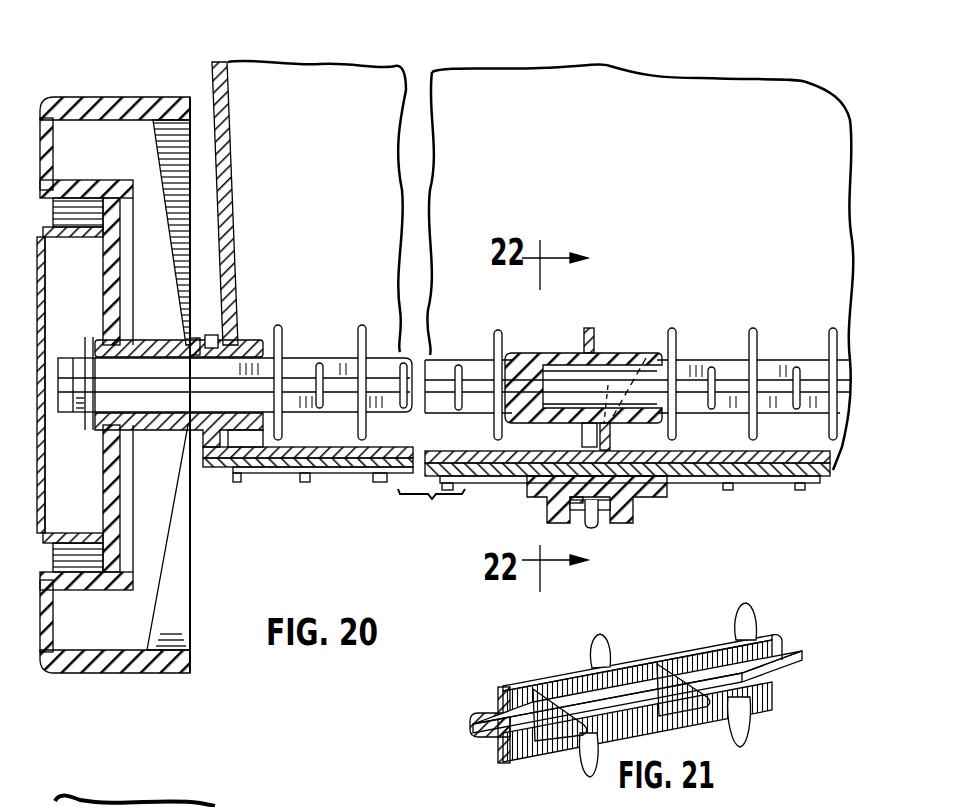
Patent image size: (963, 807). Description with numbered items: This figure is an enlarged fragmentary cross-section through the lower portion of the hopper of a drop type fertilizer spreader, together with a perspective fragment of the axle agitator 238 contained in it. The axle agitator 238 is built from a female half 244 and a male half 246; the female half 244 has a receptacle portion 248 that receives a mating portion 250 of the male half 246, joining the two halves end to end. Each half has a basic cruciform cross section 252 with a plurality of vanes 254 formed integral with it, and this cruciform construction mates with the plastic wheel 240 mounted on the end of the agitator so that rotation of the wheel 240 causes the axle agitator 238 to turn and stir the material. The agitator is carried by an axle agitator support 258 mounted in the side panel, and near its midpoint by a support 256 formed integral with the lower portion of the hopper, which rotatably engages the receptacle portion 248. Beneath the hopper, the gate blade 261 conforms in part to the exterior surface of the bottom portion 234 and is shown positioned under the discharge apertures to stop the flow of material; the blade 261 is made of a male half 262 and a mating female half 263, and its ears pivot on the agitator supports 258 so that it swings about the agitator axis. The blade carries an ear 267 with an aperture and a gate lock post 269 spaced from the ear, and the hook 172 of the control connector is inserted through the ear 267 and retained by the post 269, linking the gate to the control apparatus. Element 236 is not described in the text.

In FIG. 20, the plastic wheel 240 is at (158, 655).
In FIG. 20, the axle agitator support 258 is at (246, 345).
In FIG. 20, the female half 244 is at (292, 343).
In FIG. 20, the vane 254 is at (362, 334).
In FIG. 21, the vane 254 is at (602, 653).
In FIG. 20, the cruciform cross section 252 is at (471, 353).
In FIG. 21, the cruciform cross section 252 is at (548, 745).
In FIG. 20, the receptacle portion 248 is at (563, 352).
In FIG. 20, the axle agitator 238 is at (632, 347).
In FIG. 21, the axle agitator 238 is at (474, 743).
In FIG. 20, the mating portion 250 is at (650, 352).
In FIG. 20, the male half 246 is at (786, 350).
In FIG. 20, the plate 236 is at (345, 478).
In FIG. 20, the female half of blade 263 is at (404, 478).
In FIG. 20, the bottom portion 234 is at (466, 497).
In FIG. 20, the gate lock post 269 is at (545, 512).
In FIG. 20, the blade 261 is at (548, 466).
In FIG. 20, the hook 172 is at (600, 512).
In FIG. 20, the ear 267 is at (592, 527).
In FIG. 20, the support 256 is at (685, 474).
In FIG. 20, the male half of blade 262 is at (776, 468).